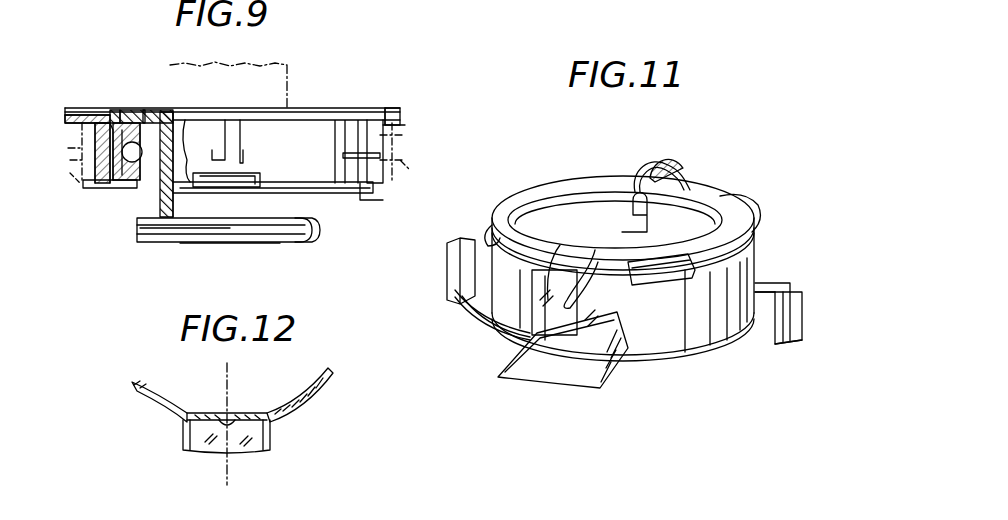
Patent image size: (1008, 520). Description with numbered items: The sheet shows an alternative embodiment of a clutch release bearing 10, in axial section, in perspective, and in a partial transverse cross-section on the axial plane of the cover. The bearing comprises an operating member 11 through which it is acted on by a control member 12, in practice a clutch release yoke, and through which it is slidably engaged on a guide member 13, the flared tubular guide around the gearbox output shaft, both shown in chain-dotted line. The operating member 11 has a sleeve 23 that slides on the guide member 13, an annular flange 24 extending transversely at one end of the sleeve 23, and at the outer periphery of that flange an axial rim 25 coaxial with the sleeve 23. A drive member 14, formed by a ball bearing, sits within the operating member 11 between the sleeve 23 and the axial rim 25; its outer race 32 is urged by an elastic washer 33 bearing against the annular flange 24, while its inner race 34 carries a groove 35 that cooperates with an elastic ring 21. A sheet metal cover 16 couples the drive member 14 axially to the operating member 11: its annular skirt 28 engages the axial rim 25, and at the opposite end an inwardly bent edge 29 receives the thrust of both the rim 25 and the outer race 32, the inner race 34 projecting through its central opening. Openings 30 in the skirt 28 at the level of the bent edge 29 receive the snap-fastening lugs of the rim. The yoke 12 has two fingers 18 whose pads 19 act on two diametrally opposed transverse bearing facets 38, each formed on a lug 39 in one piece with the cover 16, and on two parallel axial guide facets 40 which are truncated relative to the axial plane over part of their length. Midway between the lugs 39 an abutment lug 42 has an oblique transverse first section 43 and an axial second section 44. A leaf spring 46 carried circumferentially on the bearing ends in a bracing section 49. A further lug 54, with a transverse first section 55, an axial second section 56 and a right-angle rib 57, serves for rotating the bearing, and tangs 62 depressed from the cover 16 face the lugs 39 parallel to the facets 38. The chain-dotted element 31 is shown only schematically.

In FIG. 9, the clutch release bearing 10 is at (358, 105).
In FIG. 9, the operating member 11 is at (160, 112).
In FIG. 9, the control member 12 is at (72, 196).
In FIG. 9, the guide member 13 is at (291, 64).
In FIG. 9, the drive member 14 is at (235, 250).
In FIG. 9, the cover 16 is at (352, 198).
In FIG. 12, the cover 16 is at (132, 388).
In FIG. 11, the cover 16 is at (548, 180).
In FIG. 9, the fingers 18 is at (68, 176).
In FIG. 9, the pads 19 is at (70, 150).
In FIG. 9, the elastic ring 21 is at (140, 240).
In FIG. 9, the sleeve 23 is at (178, 115).
In FIG. 9, the annular flange 24 is at (114, 114).
In FIG. 9, the axial rim 25 is at (108, 190).
In FIG. 9, the annular skirt 28 is at (309, 164).
In FIG. 12, the annular skirt 28 is at (326, 385).
In FIG. 11, the annular skirt 28 is at (713, 309).
In FIG. 9, the bent edge 29 is at (345, 196).
In FIG. 11, the bent edge 29 is at (550, 280).
In FIG. 9, the openings 30 is at (248, 174).
In FIG. 11, the openings 30 is at (493, 228).
In FIG. 9, the bracket 31 is at (66, 118).
In FIG. 9, the outer race 32 is at (130, 185).
In FIG. 9, the elastic washer 33 is at (130, 114).
In FIG. 9, the inner race 34 is at (178, 236).
In FIG. 9, the groove 35 is at (300, 240).
In FIG. 9, the transverse bearing facets 38 is at (400, 132).
In FIG. 12, the transverse bearing facets 38 is at (250, 446).
In FIG. 11, the transverse bearing facets 38 is at (578, 371).
In FIG. 9, the lugs 39 is at (72, 110).
In FIG. 12, the lugs 39 is at (190, 452).
In FIG. 11, the lugs 39 is at (500, 380).
In FIG. 12, the axial guide facets 40 is at (232, 412).
In FIG. 11, the axial guide facets 40 is at (569, 325).
In FIG. 11, the lug 42 is at (452, 296).
In FIG. 11, the first section 43 is at (470, 312).
In FIG. 11, the second section 44 is at (460, 240).
In FIG. 9, the leaf spring 46 is at (345, 150).
In FIG. 11, the leaf spring 46 is at (683, 168).
In FIG. 9, the bracing section 49 is at (346, 158).
In FIG. 11, the lug 54 is at (782, 346).
In FIG. 11, the first section 55 is at (772, 284).
In FIG. 11, the second section 56 is at (766, 330).
In FIG. 11, the right-angle rib 57 is at (796, 292).
In FIG. 9, the tangs 62 is at (96, 185).
In FIG. 11, the tangs 62 is at (638, 178).